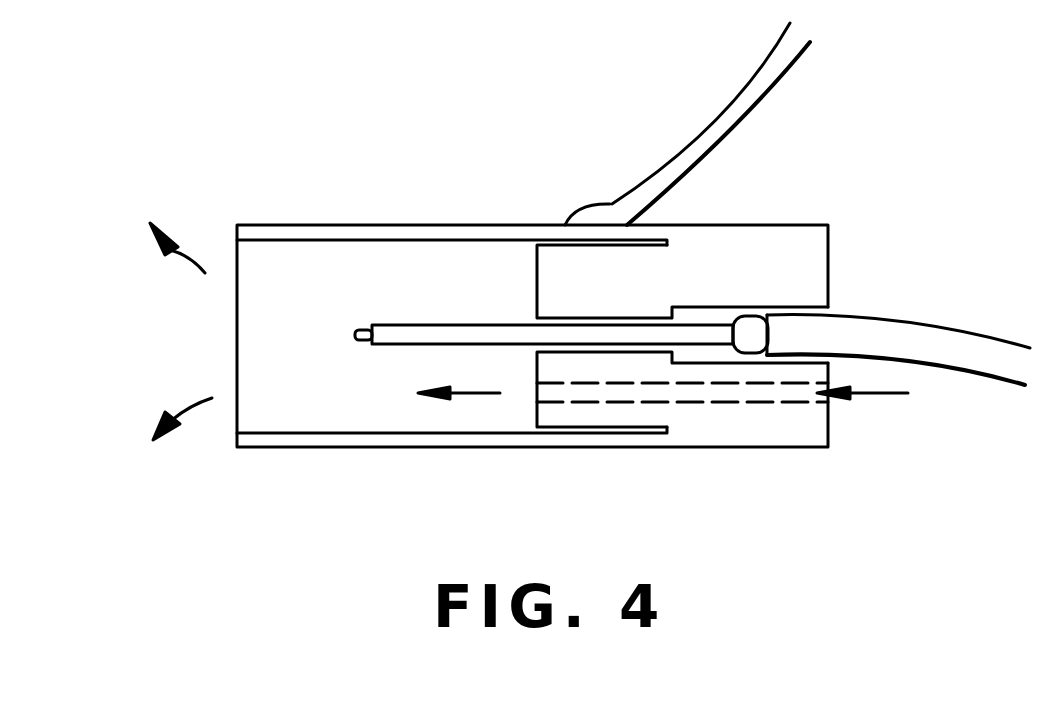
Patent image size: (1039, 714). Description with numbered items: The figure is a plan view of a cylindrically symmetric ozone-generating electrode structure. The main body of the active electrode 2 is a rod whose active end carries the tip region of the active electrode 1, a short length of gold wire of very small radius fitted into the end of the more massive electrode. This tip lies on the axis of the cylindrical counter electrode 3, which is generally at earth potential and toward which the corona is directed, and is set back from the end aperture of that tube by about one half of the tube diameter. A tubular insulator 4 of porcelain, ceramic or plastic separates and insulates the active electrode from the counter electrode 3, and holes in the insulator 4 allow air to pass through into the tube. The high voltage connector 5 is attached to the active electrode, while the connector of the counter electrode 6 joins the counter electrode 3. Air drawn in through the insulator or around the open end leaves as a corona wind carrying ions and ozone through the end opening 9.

The tip region of the active electrode 1 is at (357, 343).
The main body of the active electrode 2 is at (393, 338).
The counter electrode 3 is at (357, 225).
The insulator 4 is at (767, 240).
The high voltage connector 5 is at (907, 340).
The connector of the counter electrode 6 is at (672, 163).
The outlet opening 9 is at (262, 242).